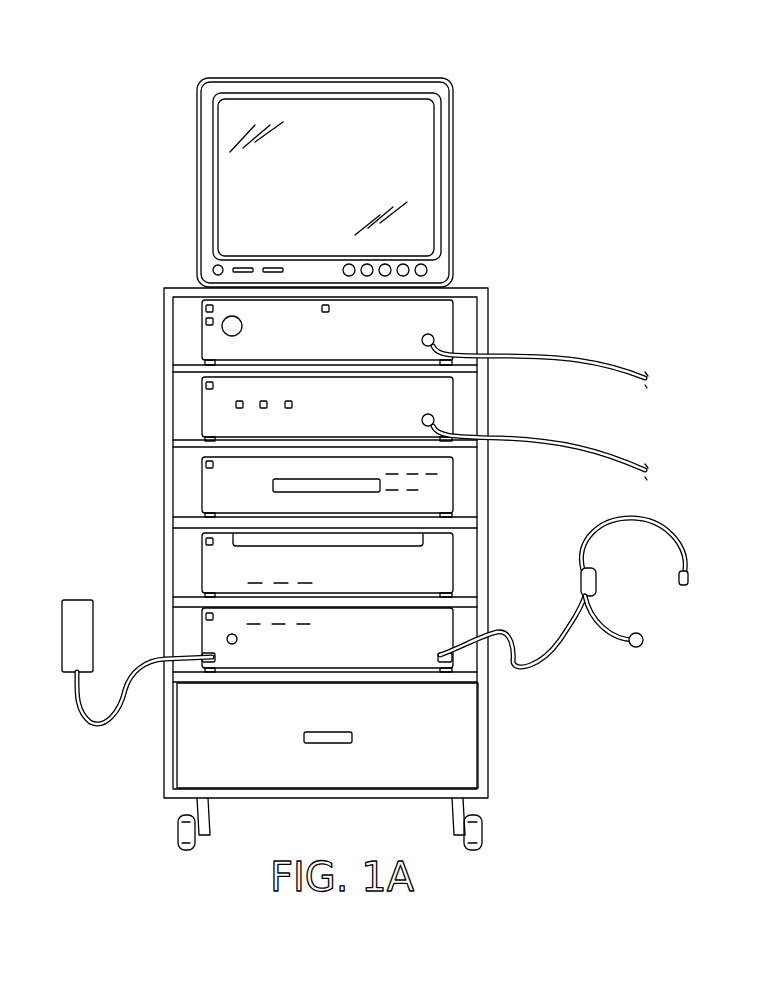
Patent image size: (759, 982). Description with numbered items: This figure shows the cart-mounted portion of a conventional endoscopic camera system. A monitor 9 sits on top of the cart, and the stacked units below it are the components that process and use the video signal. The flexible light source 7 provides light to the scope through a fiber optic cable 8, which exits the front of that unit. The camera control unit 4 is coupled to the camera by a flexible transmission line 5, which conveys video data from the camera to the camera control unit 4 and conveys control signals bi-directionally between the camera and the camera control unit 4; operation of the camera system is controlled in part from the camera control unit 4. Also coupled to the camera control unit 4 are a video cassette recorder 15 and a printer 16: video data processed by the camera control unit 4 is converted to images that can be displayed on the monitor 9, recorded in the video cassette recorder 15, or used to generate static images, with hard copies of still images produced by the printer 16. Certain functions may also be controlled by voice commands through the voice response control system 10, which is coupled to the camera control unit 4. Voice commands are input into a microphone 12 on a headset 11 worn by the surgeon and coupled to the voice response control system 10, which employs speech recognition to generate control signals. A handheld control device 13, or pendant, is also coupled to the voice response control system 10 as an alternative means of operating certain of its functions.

The monitor 9 is at (452, 140).
The light source 7 is at (200, 323).
The camera control unit 4 is at (200, 413).
The video cassette recorder 15 is at (200, 492).
The printer 16 is at (200, 568).
The voice response control system 10 is at (447, 622).
The fiber optic cable 8 is at (570, 355).
The transmission line 5 is at (580, 442).
The headset 11 is at (687, 539).
The microphone 12 is at (645, 642).
The handheld control device 13 is at (87, 628).